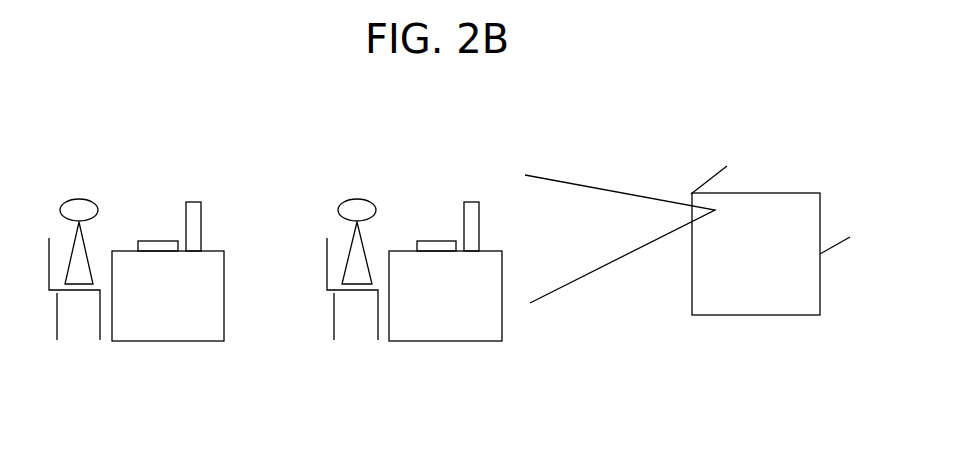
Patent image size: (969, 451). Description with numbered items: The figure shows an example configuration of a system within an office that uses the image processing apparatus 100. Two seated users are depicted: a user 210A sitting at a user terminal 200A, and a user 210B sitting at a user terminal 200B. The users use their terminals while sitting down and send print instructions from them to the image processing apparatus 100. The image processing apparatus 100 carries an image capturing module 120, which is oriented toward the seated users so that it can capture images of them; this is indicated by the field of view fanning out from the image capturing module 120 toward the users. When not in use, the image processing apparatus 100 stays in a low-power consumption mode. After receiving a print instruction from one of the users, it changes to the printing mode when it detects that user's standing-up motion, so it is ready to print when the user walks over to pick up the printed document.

The user 210A is at (83, 198).
The user terminal 200A is at (194, 201).
The user 210B is at (360, 198).
The user terminal 200B is at (474, 201).
The image processing apparatus 100 is at (768, 303).
The image capturing module 120 is at (700, 213).